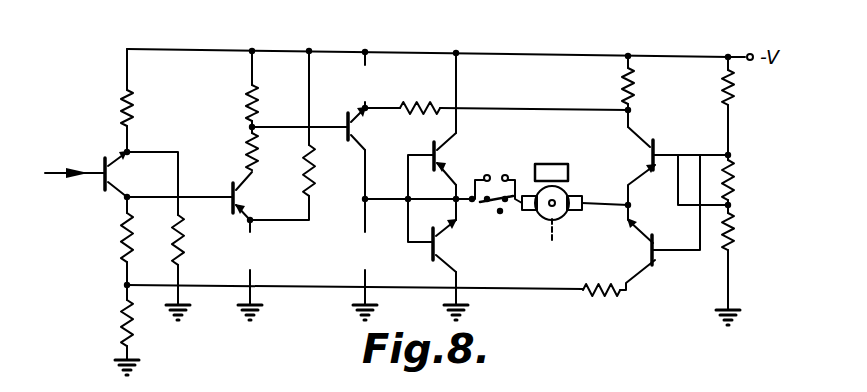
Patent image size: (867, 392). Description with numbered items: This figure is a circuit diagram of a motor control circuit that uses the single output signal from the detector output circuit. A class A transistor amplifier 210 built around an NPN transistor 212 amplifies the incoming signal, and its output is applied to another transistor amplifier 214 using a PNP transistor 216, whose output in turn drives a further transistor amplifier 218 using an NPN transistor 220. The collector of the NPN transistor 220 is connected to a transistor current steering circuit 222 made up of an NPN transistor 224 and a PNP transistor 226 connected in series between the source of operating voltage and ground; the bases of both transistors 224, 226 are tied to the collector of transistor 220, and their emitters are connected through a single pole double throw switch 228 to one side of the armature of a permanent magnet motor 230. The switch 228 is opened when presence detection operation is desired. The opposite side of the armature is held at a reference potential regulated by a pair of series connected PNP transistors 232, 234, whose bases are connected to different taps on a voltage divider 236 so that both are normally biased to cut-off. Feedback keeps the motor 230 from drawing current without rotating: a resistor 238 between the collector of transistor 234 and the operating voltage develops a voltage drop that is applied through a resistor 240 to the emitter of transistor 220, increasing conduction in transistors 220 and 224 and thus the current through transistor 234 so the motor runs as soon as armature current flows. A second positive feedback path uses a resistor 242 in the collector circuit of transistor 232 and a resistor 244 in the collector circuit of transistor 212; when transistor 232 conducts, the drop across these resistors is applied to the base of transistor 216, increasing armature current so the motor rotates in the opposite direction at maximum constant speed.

The class A transistor amplifier 210 is at (185, 132).
The NPN transistor 212 is at (106, 163).
The transistor amplifier 214 is at (231, 185).
The PNP transistor 216 is at (292, 196).
The transistor amplifier 218 is at (343, 110).
The NPN transistor 220 is at (343, 140).
The transistor current steering circuit 222 is at (445, 218).
The NPN transistor 224 is at (438, 246).
The PNP transistor 226 is at (444, 160).
The single pole double throw switch 228 is at (488, 208).
The permanent magnet motor 230 is at (621, 195).
The PNP transistor 232 is at (656, 256).
The PNP transistor 234 is at (652, 148).
The voltage divider 236 is at (776, 215).
The resistor 238 is at (634, 91).
The resistor 240 is at (410, 104).
The resistor 242 is at (603, 300).
The resistor 244 is at (122, 323).